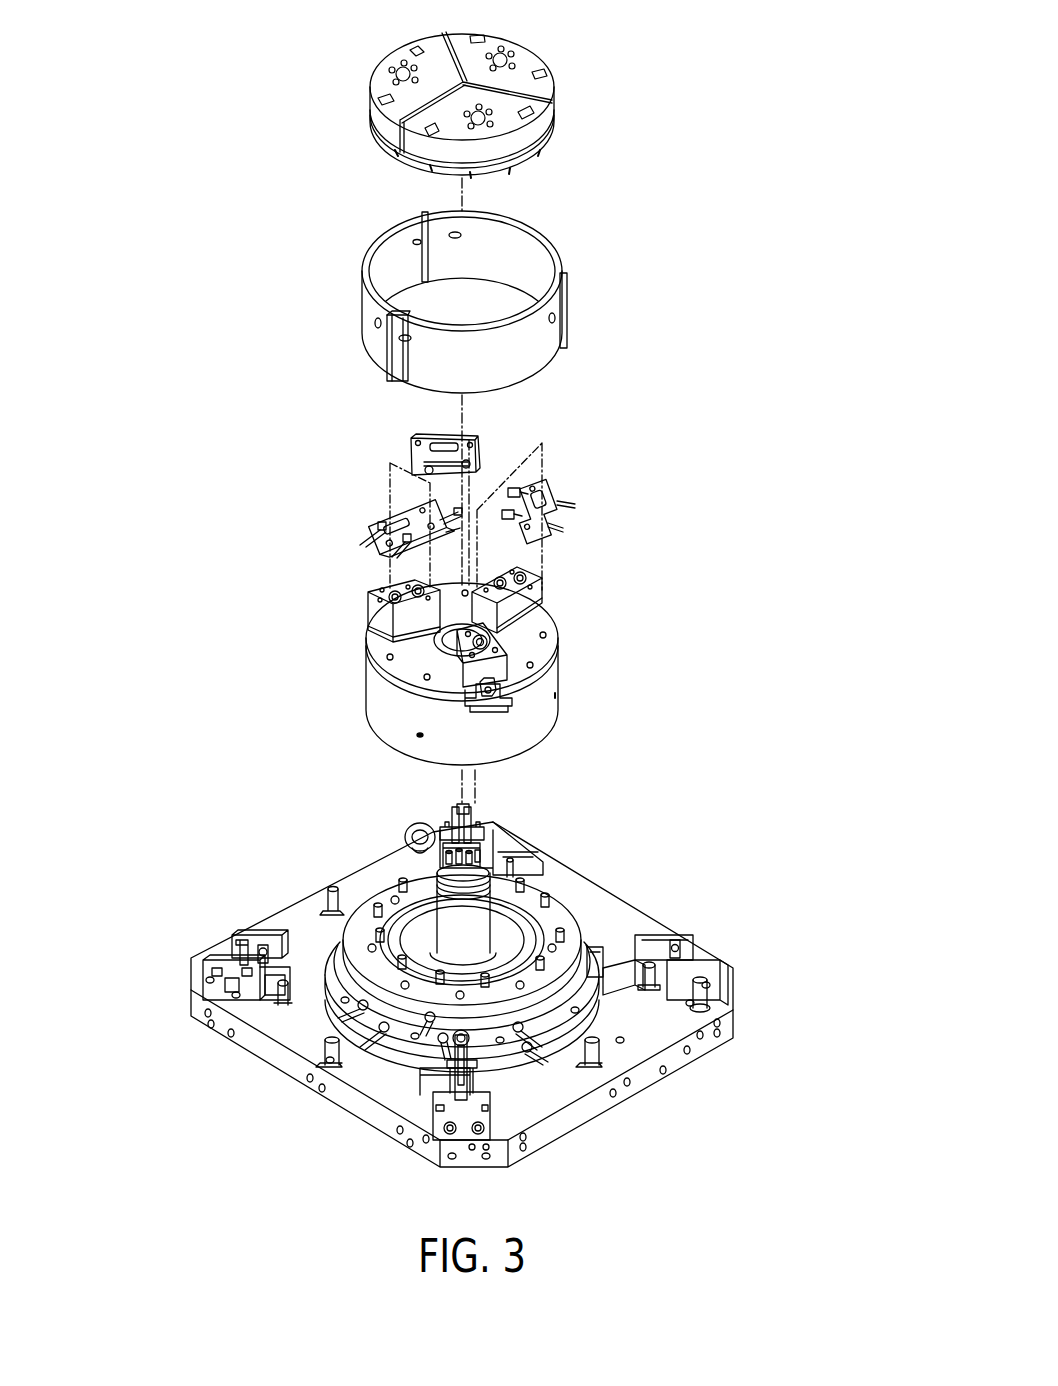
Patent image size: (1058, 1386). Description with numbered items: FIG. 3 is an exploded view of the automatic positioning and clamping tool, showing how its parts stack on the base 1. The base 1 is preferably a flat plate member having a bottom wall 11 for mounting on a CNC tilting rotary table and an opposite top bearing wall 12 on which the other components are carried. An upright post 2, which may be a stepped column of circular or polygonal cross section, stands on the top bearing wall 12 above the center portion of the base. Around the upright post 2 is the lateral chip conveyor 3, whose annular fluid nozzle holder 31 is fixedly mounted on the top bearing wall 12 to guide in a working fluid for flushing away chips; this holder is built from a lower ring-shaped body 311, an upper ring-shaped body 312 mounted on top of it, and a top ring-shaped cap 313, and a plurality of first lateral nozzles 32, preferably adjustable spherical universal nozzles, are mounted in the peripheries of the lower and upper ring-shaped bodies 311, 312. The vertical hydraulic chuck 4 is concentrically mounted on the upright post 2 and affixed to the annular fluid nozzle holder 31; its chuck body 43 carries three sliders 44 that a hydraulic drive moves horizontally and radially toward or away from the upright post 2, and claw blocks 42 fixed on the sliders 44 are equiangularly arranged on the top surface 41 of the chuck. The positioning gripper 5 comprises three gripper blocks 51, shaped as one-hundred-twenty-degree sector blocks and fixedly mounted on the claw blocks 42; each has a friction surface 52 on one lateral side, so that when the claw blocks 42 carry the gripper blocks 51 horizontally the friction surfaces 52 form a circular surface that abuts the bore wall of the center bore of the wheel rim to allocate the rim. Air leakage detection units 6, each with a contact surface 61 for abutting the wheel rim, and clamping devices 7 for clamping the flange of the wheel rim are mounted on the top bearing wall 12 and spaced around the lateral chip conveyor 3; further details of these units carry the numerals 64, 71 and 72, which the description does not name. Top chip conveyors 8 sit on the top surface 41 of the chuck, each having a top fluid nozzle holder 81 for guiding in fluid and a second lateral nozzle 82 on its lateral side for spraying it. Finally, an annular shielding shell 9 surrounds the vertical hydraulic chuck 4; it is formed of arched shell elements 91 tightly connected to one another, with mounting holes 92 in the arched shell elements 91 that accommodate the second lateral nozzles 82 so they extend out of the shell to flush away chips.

The base 1 is at (467, 995).
The bottom wall 11 is at (484, 994).
The top bearing wall 12 is at (627, 1055).
The upright post 2 is at (492, 922).
The lateral chip conveyor 3 is at (571, 995).
The annular fluid nozzle holder 31 is at (573, 957).
The lower ring-shaped body 311 is at (603, 982).
The upper ring-shaped body 312 is at (625, 982).
The top ring-shaped cap 313 is at (675, 950).
The first lateral nozzles 32 is at (532, 1053).
The vertical hydraulic chuck 4 is at (459, 659).
The top surface 41 is at (380, 648).
The claw blocks 42 is at (380, 598).
The chuck body 43 is at (385, 695).
The sliders 44 is at (510, 704).
The positioning gripper 5 is at (460, 103).
The gripper blocks 51 is at (403, 58).
The friction surface 52 is at (385, 125).
The air leakage detection unit 6 is at (403, 960).
The contact surface 61 is at (338, 888).
The pin base 64 is at (325, 895).
The clamping devices 7 is at (301, 1042).
The clamp body 71 is at (222, 978).
The clamp arm 72 is at (243, 933).
The top chip conveyor 8 is at (461, 466).
The top fluid nozzle holder 81 is at (553, 485).
The second lateral nozzle 82 is at (553, 481).
The annular shielding shell 9 is at (460, 302).
The arched shell elements 91 is at (368, 305).
The mounting holes 92 is at (375, 325).